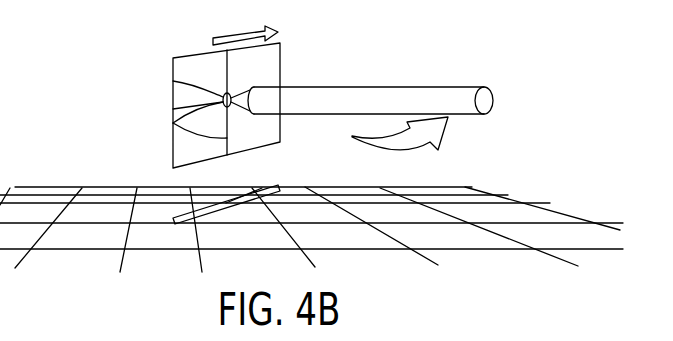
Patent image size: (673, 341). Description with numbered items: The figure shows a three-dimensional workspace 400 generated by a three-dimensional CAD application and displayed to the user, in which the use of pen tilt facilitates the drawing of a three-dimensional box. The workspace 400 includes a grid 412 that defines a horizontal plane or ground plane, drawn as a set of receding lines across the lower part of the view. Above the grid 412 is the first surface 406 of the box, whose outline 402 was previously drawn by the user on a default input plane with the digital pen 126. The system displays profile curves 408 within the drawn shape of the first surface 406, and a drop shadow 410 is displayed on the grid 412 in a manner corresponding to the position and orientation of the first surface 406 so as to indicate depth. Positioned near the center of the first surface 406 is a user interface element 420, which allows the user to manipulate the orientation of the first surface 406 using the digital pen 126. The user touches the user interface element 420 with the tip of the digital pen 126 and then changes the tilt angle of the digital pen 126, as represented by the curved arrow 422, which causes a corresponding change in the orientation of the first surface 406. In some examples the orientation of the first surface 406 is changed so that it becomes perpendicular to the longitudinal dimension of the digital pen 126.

The 3D workspace 400 is at (125, 59).
The outline 402 is at (188, 54).
The first surface 406 is at (279, 60).
The user interface element 420 is at (173, 82).
The profile curves 408 is at (173, 124).
The drop shadow 410 is at (255, 187).
The digital pen 126 is at (385, 87).
The arrow 422 is at (430, 151).
The grid 412 is at (590, 216).